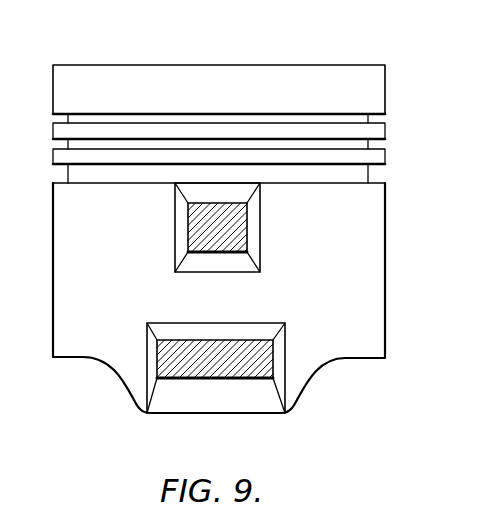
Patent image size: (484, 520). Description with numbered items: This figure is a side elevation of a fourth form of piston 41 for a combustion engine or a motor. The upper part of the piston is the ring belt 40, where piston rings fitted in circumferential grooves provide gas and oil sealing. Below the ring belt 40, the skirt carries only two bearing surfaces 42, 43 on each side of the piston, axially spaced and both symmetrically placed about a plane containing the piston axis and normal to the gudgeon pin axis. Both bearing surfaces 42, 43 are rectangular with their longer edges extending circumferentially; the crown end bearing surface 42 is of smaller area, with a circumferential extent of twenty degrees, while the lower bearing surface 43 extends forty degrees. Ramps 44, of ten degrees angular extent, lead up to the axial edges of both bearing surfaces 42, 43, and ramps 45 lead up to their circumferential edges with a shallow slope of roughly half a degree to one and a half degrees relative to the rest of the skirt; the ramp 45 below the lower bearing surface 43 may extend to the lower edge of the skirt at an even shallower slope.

The ring belt 40 is at (155, 82).
The fourth piston 41 is at (308, 60).
The crown end bearing surface 42 is at (227, 228).
The lower bearing surface 43 is at (222, 360).
The ramps 44 is at (181, 231).
The ramps 45 is at (240, 192).